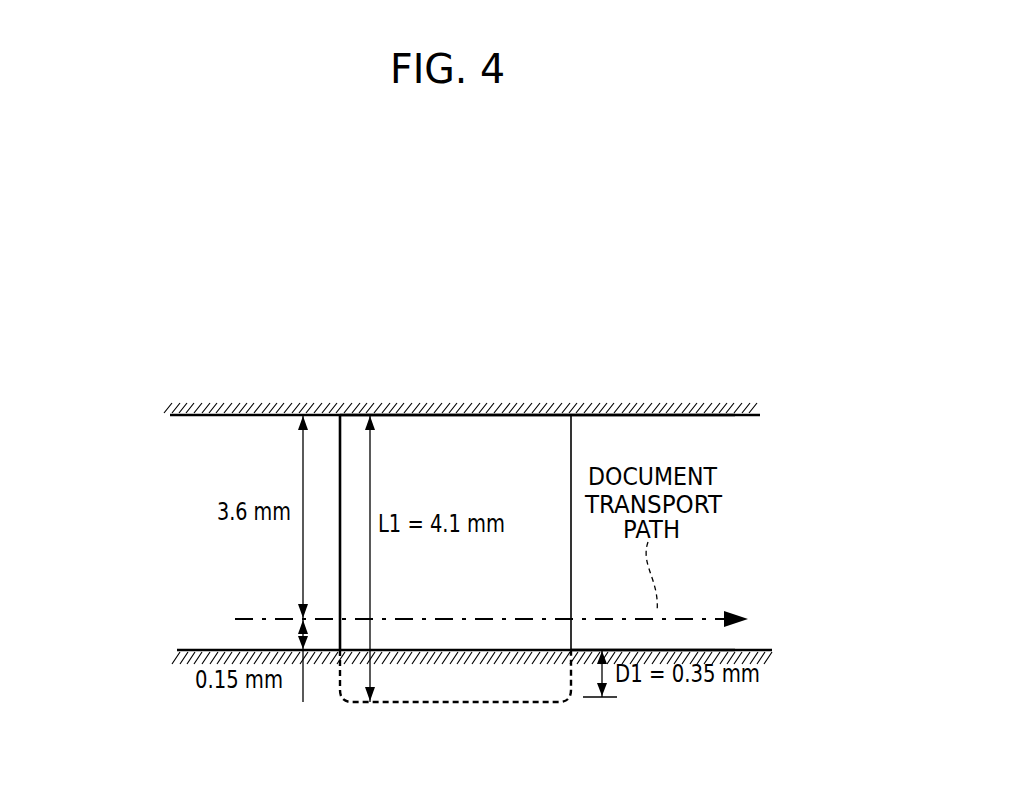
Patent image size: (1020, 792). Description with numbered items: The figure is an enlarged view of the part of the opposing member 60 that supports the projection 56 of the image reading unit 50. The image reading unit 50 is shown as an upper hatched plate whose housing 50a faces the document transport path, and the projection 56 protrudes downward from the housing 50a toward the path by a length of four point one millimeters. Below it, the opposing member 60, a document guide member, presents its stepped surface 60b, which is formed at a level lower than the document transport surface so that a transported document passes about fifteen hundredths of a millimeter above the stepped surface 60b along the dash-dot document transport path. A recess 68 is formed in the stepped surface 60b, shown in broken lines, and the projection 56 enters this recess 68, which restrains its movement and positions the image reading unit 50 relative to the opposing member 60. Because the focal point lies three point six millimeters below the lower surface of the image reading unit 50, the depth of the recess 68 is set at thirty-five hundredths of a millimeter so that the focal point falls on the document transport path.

The image reading unit 50 is at (176, 430).
The housing 50a is at (735, 415).
The projection 56 is at (450, 448).
The opposing member 60 is at (185, 637).
The stepped surface 60b is at (735, 650).
The recess 68 is at (465, 702).